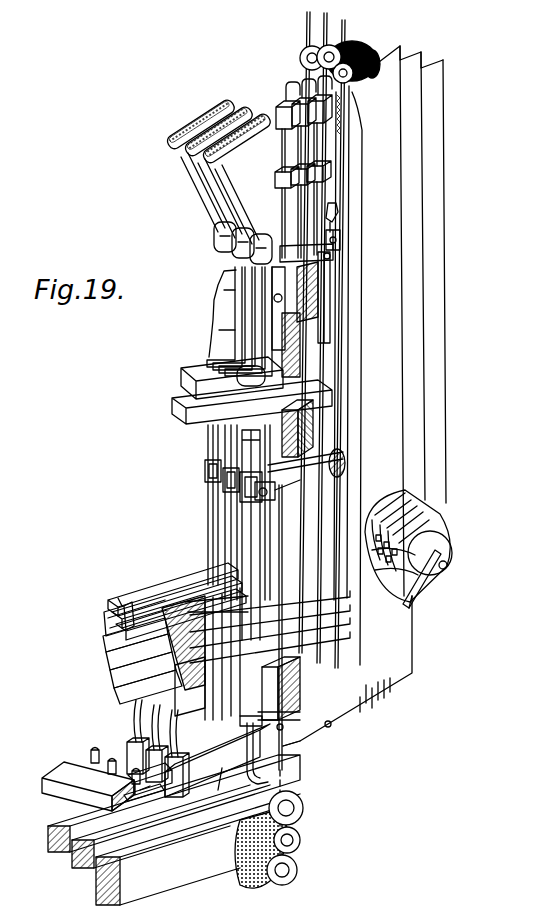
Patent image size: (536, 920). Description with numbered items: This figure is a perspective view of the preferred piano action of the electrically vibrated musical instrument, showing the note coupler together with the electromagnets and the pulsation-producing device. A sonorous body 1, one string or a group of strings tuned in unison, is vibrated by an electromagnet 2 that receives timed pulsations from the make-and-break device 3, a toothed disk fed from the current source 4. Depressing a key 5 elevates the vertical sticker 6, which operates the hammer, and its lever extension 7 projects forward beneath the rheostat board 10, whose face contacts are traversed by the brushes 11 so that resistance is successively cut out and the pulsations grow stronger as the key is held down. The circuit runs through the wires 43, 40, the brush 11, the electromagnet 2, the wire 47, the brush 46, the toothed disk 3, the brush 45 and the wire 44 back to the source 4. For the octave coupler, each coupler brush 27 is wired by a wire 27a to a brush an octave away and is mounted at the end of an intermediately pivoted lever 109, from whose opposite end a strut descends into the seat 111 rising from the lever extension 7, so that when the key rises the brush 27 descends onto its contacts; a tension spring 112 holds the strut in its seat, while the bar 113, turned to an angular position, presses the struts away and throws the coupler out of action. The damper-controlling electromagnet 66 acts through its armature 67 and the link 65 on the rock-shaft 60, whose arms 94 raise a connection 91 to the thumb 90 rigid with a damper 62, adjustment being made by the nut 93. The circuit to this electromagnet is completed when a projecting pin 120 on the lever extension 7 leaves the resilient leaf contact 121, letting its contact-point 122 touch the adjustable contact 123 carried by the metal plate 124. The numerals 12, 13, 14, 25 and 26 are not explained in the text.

The sonorous body 1 is at (347, 28).
The electromagnet 2 is at (360, 80).
The make-and-break device 3 is at (452, 540).
The current source 4 is at (386, 696).
The key 5 is at (174, 830).
The vertical sticker 6 is at (212, 519).
The lever extension 7 is at (198, 760).
The rheostat board 10 is at (276, 730).
The brush 11 is at (154, 730).
The block 12 is at (230, 700).
The step plate 13 is at (138, 690).
The step plate 14 is at (128, 676).
The step plate 25 is at (118, 662).
The step plate 26 is at (108, 648).
The coupler brush 27 is at (104, 612).
The wire 27a is at (122, 584).
The wire 40 is at (300, 747).
The wire 43 is at (341, 727).
The wire 44 is at (412, 655).
The brush 45 is at (416, 603).
The brush 46 is at (434, 520).
The wire 47 is at (442, 345).
The rock-shaft 60 is at (279, 493).
The damper 62 is at (300, 88).
The link 65 is at (304, 768).
The damper-controlling electromagnet 66 is at (294, 806).
The armature 67 is at (296, 839).
The thumb 90 is at (337, 210).
The connection 91 is at (338, 286).
The nut 93 is at (341, 240).
The arm 94 is at (346, 466).
The intermediately pivoted lever 109 is at (160, 568).
The seat 111 is at (221, 789).
The tension spring 112 is at (230, 594).
The bar 113 is at (231, 610).
The projecting pin 120 is at (150, 786).
The resilient leaf contact 121 is at (146, 800).
The contact-point 122 is at (130, 806).
The adjustable contact 123 is at (102, 752).
The metal plate 124 is at (80, 768).